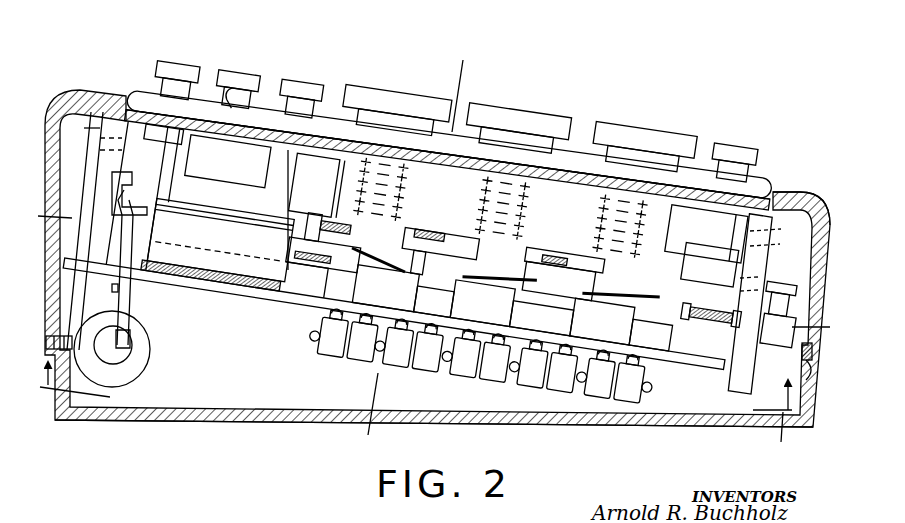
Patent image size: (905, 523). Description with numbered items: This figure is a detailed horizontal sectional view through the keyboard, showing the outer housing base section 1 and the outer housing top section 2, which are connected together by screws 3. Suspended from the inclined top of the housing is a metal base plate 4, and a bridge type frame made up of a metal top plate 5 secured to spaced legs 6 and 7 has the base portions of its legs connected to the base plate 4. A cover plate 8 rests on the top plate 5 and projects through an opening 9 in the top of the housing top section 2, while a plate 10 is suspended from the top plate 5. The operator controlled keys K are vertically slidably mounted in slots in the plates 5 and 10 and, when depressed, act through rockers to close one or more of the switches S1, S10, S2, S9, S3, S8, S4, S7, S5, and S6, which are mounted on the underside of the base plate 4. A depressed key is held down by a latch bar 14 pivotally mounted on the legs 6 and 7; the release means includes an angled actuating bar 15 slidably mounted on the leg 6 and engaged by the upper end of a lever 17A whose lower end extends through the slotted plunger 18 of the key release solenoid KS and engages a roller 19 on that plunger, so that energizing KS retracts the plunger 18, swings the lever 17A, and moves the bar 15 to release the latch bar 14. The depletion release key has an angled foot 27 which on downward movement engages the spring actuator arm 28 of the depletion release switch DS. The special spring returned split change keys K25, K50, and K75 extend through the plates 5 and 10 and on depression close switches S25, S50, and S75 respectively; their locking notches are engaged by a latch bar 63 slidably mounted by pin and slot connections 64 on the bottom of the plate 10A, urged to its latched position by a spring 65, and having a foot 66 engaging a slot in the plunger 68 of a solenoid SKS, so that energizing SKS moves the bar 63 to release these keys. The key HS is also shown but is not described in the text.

The outer housing base section 1 is at (216, 422).
The outer housing top section 2 is at (77, 90).
The screws 3 is at (62, 344).
The metal base plate 4 is at (224, 295).
The metal top plate 5 is at (440, 163).
The leg 6 is at (757, 384).
The leg 7 is at (419, 339).
The cover plate 8 is at (530, 155).
The opening 9 is at (775, 186).
The plate 10 is at (480, 74).
The plate 10A is at (590, 177).
The latch bar 14 is at (698, 244).
The angled actuating bar 15 is at (140, 198).
The angled foot 27 is at (722, 269).
The spring actuator arm 28 is at (770, 266).
The lever 17A is at (128, 312).
The plunger 18 is at (150, 340).
The roller 19 is at (148, 356).
The latch bar 63 is at (593, 257).
The pin and slot connections 64 is at (431, 236).
The spring 65 is at (712, 305).
The foot 66 is at (319, 220).
The plunger 68 is at (298, 268).
The operator controlled keys K is at (182, 64).
The hook key HS is at (243, 68).
The split change key K75 is at (376, 93).
The split change key K50 is at (508, 114).
The split change key K25 is at (640, 124).
The solenoid SKS is at (244, 243).
The key release solenoid KS is at (130, 385).
The depletion release switch DS is at (779, 314).
The switch S75 is at (385, 288).
The switch S50 is at (482, 303).
The switch S25 is at (602, 321).
The switch S1 is at (333, 332).
The switch S10 is at (363, 337).
The switch S2 is at (398, 342).
The switch S9 is at (428, 347).
The switch S3 is at (466, 353).
The switch S8 is at (495, 357).
The switch S4 is at (533, 363).
The switch S7 is at (562, 367).
The switch S5 is at (600, 373).
The switch S6 is at (630, 378).